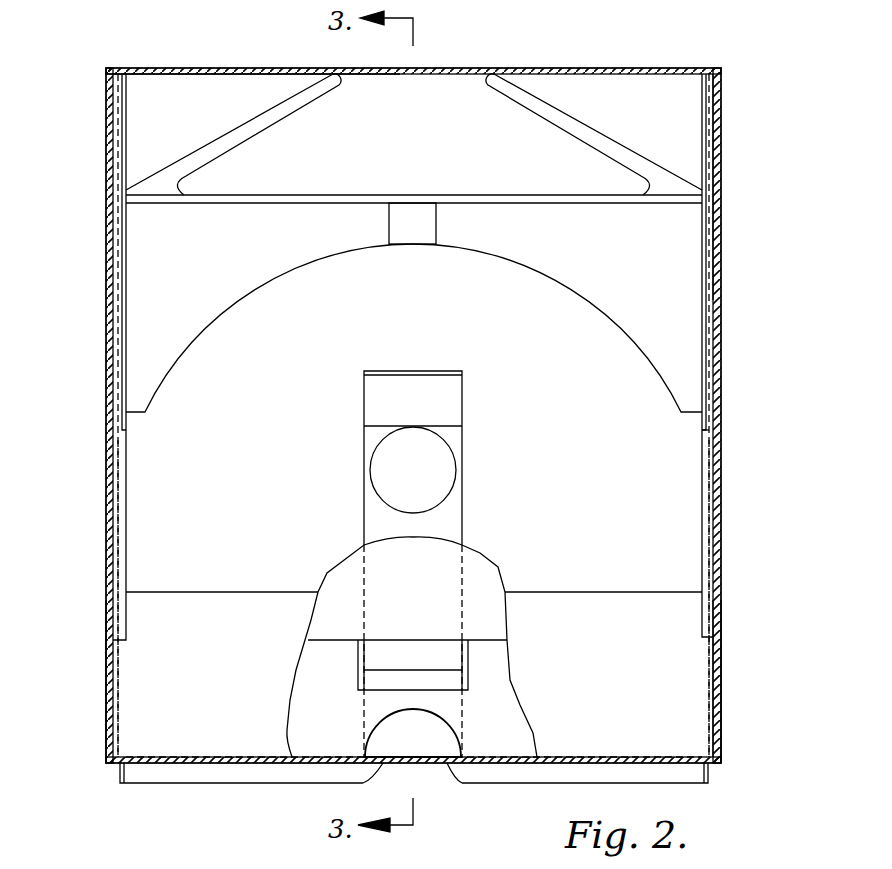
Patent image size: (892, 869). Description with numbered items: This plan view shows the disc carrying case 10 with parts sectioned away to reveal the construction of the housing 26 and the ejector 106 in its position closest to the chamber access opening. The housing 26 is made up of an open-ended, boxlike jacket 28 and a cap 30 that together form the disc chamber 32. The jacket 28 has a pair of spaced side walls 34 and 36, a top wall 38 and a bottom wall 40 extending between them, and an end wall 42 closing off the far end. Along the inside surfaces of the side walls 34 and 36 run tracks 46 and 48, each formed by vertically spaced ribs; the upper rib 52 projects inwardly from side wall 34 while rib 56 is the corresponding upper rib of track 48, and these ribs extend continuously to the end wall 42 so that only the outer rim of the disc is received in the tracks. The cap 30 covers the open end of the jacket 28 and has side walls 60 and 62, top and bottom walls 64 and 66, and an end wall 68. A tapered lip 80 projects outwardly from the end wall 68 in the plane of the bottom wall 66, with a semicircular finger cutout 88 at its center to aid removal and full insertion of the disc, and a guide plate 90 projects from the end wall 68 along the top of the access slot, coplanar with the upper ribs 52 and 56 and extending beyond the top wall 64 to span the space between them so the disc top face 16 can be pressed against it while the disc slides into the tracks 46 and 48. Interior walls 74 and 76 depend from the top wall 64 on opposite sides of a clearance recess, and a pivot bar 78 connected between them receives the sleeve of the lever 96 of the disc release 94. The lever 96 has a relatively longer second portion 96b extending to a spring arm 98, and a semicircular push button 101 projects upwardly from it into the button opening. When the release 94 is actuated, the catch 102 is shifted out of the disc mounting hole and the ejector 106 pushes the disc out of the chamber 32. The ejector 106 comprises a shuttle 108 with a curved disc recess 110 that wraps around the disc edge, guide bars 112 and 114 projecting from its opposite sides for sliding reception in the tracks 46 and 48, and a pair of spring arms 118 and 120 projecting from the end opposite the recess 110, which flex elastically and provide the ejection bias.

The disc carrying case 10 is at (728, 240).
The top face 16 is at (414, 237).
The housing 26 is at (662, 58).
The jacket 28 is at (722, 106).
The cap 30 is at (722, 698).
The disc chamber 32 is at (700, 512).
The side wall 34 is at (108, 132).
The side wall 36 is at (715, 138).
The top wall 38 is at (482, 556).
The bottom wall 40 is at (686, 443).
The end wall 42 is at (215, 70).
The track 46 is at (120, 455).
The track 48 is at (704, 478).
The second rib 52 is at (122, 110).
The rib 56 is at (704, 112).
The side wall 60 is at (108, 706).
The side wall 62 is at (716, 666).
The top wall 64 is at (510, 705).
The bottom wall 66 is at (692, 740).
The end wall 68 is at (158, 764).
The interior wall 74 is at (360, 652).
The interior wall 76 is at (465, 652).
The pivot bar 78 is at (465, 668).
The tapered lip 80 is at (214, 776).
The finger cutout 88 is at (447, 766).
The guide plate 90 is at (596, 592).
The disc release 94 is at (463, 432).
The lever 96 is at (364, 500).
The second portion 96b is at (463, 488).
The spring arm 98 is at (463, 376).
The push button 101 is at (385, 742).
The catch 102 is at (385, 452).
The ejector 106 is at (566, 268).
The shuttle 108 is at (300, 258).
The disc recess 110 is at (245, 318).
The guide bar 112 is at (126, 270).
The guide bar 114 is at (704, 270).
The spring arm 118 is at (278, 120).
The spring arm 120 is at (556, 115).